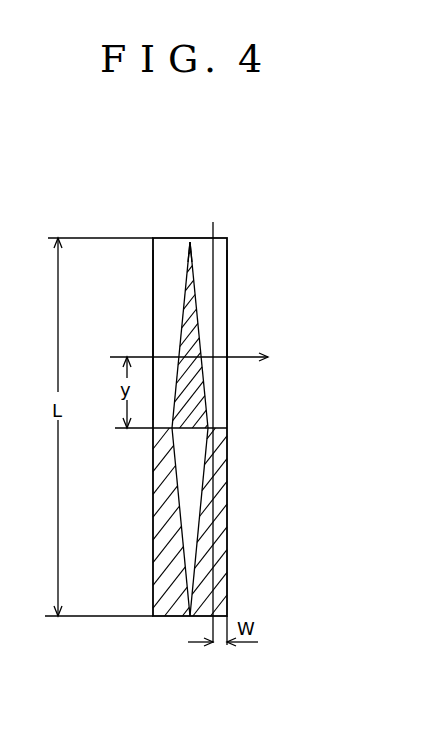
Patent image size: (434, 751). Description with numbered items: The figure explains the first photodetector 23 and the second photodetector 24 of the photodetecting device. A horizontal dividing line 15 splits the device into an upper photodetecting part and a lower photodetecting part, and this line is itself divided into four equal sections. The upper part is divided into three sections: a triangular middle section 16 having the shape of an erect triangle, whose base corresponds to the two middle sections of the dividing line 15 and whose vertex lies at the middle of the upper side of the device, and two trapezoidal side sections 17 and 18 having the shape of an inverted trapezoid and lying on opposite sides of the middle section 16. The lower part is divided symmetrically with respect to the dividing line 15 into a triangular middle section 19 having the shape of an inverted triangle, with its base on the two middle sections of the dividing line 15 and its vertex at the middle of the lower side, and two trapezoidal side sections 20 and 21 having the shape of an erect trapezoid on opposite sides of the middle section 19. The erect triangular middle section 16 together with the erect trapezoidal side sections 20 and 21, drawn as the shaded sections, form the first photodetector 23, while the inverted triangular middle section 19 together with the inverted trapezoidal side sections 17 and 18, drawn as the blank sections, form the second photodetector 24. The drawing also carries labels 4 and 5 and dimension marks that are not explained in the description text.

The section line / cross-section position 4 is at (237, 357).
The heat transfer element body 5 is at (240, 395).
The dividing line 15 is at (163, 428).
The triangular middle section 16 is at (187, 328).
The trapezoidal side section 17 is at (167, 292).
The trapezoidal side section 18 is at (220, 294).
The triangular middle section 19 is at (192, 492).
The trapezoidal side section 20 is at (167, 560).
The trapezoidal side section 21 is at (220, 566).
The first photodetector 23 is at (201, 272).
The second photodetector 24 is at (202, 523).